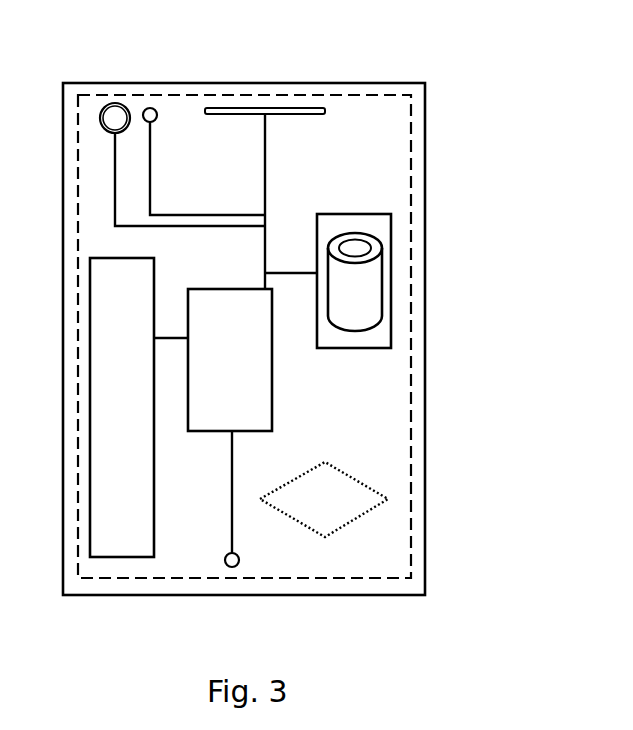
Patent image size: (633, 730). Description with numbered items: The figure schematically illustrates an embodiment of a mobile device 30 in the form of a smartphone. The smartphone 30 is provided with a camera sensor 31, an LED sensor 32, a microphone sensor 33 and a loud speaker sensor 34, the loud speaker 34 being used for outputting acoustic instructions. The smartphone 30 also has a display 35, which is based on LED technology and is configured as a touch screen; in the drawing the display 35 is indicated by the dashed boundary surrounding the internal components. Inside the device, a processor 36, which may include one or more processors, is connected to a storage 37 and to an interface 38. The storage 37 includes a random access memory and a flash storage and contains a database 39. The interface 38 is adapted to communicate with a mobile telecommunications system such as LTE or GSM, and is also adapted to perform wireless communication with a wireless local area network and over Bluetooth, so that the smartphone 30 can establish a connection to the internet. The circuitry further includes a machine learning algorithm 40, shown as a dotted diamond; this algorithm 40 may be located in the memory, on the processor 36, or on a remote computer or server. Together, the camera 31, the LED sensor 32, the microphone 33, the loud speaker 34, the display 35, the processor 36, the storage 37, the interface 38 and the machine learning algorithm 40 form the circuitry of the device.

The mobile device 30 is at (226, 85).
The camera sensor 31 is at (100, 118).
The LED sensor 32 is at (149, 108).
The microphone sensor 33 is at (232, 567).
The loud speaker sensor 34 is at (326, 110).
The display 35 is at (412, 446).
The processor 36 is at (213, 421).
The storage 37 is at (392, 238).
The interface 38 is at (122, 407).
The database 39 is at (382, 308).
The machine learning algorithm 40 is at (324, 499).